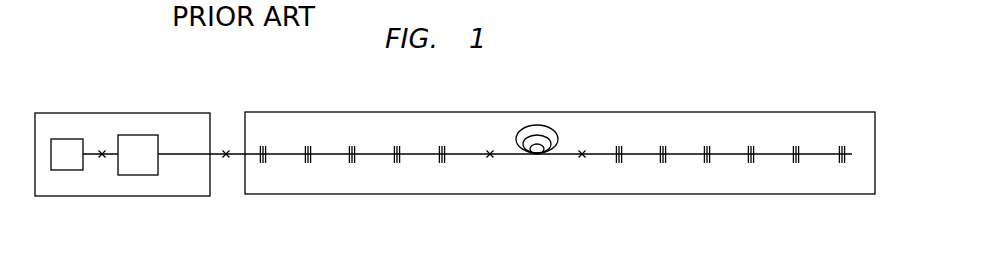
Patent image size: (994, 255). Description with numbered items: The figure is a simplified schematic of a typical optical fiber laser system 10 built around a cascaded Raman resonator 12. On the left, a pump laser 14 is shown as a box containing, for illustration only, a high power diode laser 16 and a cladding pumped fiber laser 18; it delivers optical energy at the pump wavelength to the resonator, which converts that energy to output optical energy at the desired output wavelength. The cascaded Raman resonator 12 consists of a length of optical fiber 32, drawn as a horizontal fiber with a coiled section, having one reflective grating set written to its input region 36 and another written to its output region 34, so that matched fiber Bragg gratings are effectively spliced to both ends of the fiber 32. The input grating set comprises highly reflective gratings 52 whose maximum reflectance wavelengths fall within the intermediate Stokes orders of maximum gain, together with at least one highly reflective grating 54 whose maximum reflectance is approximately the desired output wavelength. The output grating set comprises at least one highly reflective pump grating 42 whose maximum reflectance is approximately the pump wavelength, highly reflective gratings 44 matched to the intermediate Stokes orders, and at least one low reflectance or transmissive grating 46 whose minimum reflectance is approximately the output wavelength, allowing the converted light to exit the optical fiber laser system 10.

The optical fiber laser system 10 is at (74, 81).
The cascaded Raman resonator 12 is at (250, 112).
The pump laser 14 is at (100, 193).
The high power diode laser 16 is at (75, 140).
The cladding pumped fiber laser 18 is at (148, 135).
The optical fiber 32 is at (553, 128).
The output region 34 is at (607, 157).
The input region 36 is at (245, 163).
The pump grating 42 is at (843, 143).
The highly reflective gratings 44 is at (709, 143).
The low reflectance grating 46 is at (620, 143).
The highly reflective gratings 52 is at (355, 143).
The highly reflective grating 54 is at (265, 143).